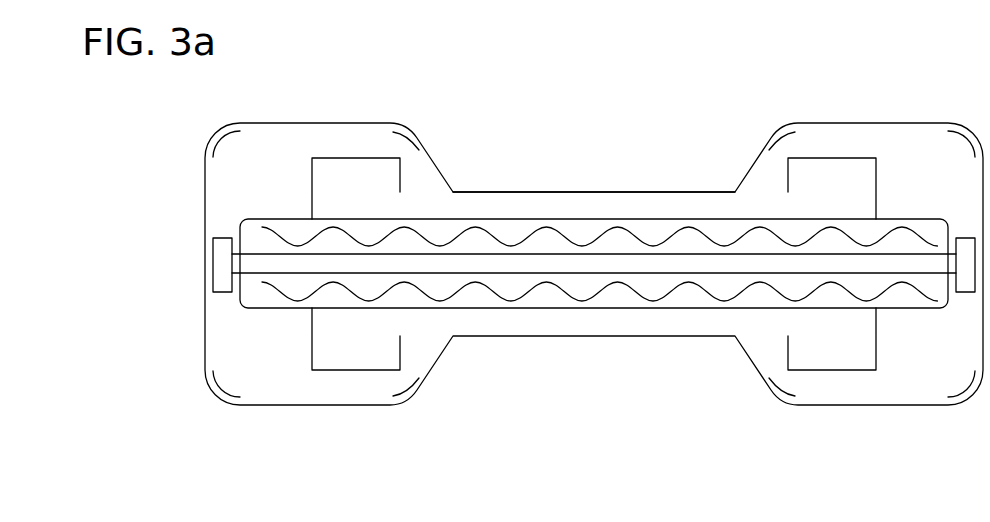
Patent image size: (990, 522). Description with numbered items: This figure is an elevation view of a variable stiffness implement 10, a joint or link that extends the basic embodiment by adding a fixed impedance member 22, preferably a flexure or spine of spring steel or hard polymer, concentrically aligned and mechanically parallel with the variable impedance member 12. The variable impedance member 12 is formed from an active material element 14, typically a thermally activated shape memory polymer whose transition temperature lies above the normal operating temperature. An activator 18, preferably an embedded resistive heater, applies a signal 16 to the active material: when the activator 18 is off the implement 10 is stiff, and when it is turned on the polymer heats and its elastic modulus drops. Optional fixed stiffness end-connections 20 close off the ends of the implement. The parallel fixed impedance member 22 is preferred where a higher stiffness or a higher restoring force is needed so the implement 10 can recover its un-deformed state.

The variable stiffness implement 10 is at (205, 440).
The variable impedance member 12 is at (453, 158).
The active material element 14 is at (672, 336).
The signal 16 is at (595, 293).
The activator 18 is at (537, 308).
The fixed stiffness end-connections 20 is at (246, 190).
The fixed impedance member 22 is at (213, 264).